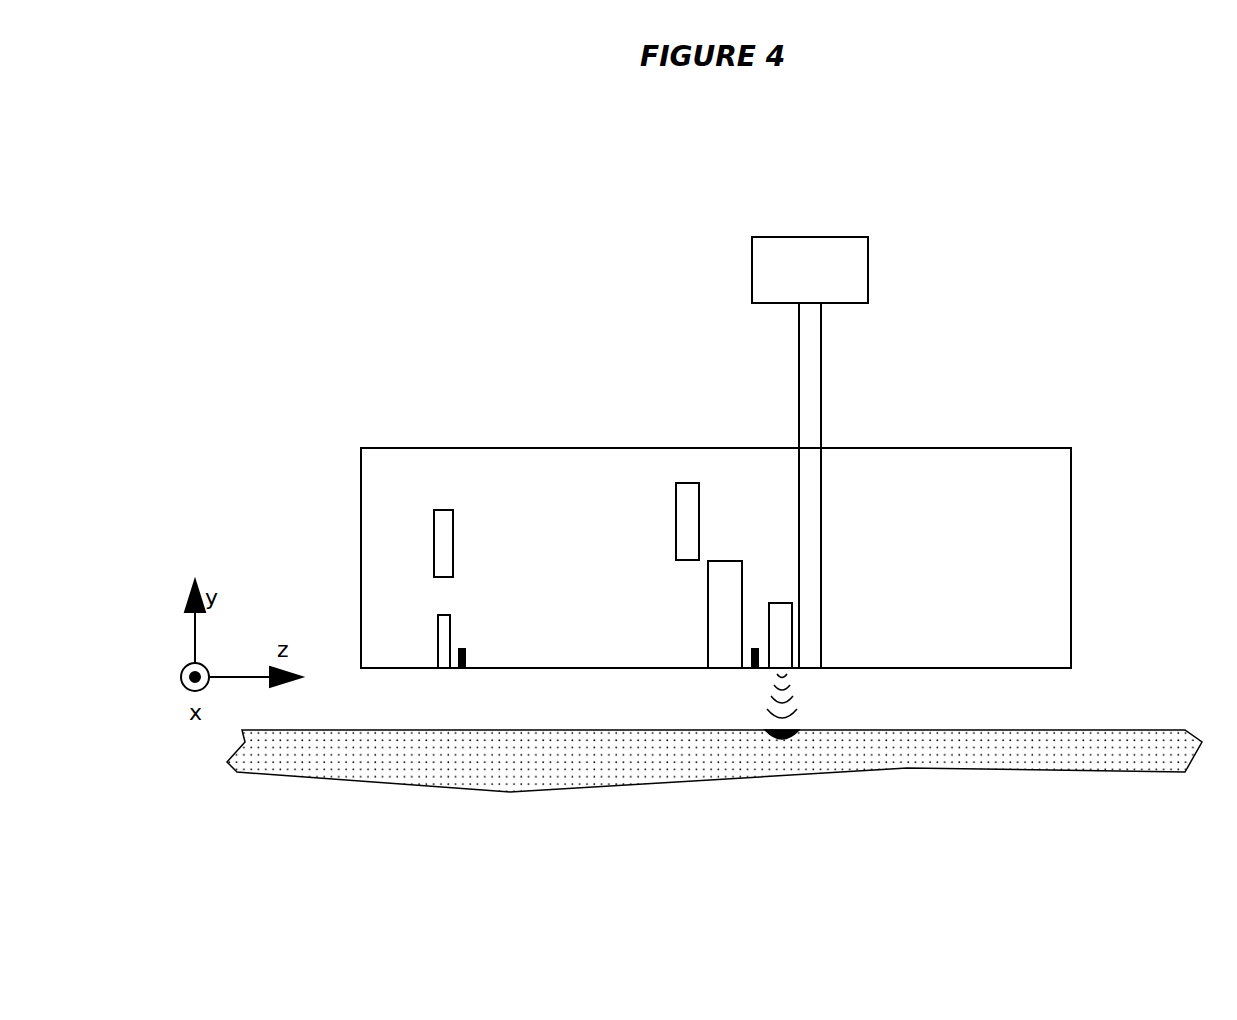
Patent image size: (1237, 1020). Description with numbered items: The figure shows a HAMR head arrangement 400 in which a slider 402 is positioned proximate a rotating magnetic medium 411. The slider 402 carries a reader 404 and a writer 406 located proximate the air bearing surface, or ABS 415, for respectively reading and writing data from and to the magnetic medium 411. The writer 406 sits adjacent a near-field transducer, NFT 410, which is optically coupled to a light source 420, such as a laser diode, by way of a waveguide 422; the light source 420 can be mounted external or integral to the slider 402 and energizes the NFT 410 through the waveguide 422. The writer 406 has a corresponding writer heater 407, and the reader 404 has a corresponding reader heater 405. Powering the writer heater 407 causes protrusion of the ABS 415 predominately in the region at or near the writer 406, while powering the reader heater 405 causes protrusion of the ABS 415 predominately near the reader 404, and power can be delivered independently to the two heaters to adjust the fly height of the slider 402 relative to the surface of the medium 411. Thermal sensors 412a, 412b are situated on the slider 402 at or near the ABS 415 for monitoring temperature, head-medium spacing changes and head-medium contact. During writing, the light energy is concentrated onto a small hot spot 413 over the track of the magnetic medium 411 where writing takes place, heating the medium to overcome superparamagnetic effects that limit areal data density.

The HAMR head arrangement 400 is at (452, 284).
The slider 402 is at (1103, 419).
The reader 404 is at (438, 632).
The reader heater 405 is at (453, 545).
The writer 406 is at (708, 628).
The writer heater 407 is at (676, 530).
The near-field transducer 410 is at (779, 603).
The magnetic medium 411 is at (1133, 730).
The thermal sensor 412a is at (753, 669).
The thermal sensor 412b is at (462, 672).
The hot spot 413 is at (781, 740).
The air bearing surface 415 is at (953, 669).
The light source 420 is at (868, 265).
The waveguide 422 is at (821, 382).